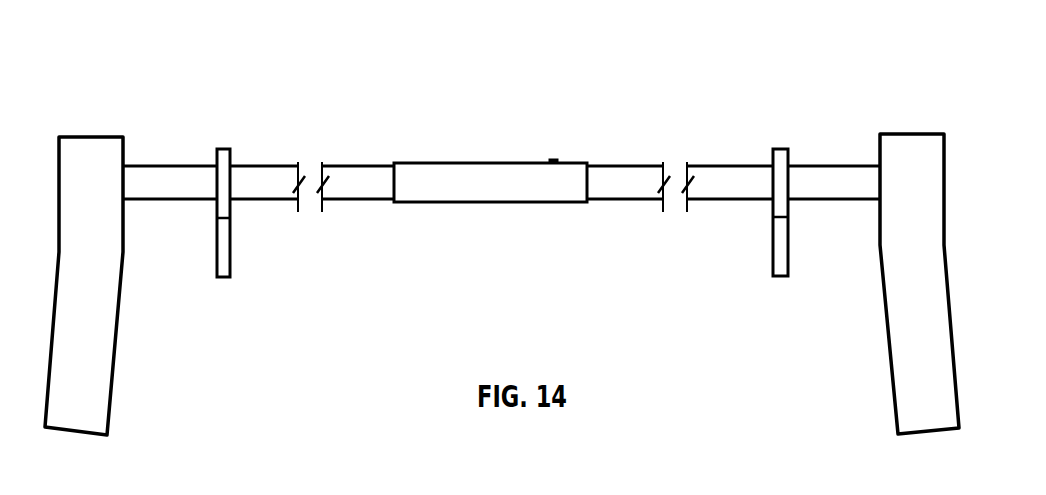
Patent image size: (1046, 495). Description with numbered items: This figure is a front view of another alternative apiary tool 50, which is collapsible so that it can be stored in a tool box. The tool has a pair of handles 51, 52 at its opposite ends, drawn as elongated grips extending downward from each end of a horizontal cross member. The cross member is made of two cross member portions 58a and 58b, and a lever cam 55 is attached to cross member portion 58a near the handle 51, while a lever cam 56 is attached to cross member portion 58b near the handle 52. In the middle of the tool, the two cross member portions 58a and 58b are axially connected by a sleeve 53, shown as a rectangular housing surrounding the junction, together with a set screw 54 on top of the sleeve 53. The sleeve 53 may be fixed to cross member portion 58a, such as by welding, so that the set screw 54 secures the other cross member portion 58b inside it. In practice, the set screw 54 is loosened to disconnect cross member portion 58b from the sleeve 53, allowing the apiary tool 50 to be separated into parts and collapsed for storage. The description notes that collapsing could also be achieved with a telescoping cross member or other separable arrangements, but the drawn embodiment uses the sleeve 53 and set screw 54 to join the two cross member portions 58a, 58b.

The apiary tool 50 is at (832, 72).
The handle 51 is at (117, 348).
The handle 52 is at (888, 348).
The sleeve 53 is at (447, 162).
The set screw 54 is at (553, 159).
The lever cam 55 is at (217, 150).
The lever cam 56 is at (773, 150).
The cross member portion 58a is at (362, 166).
The cross member portion 58b is at (627, 166).